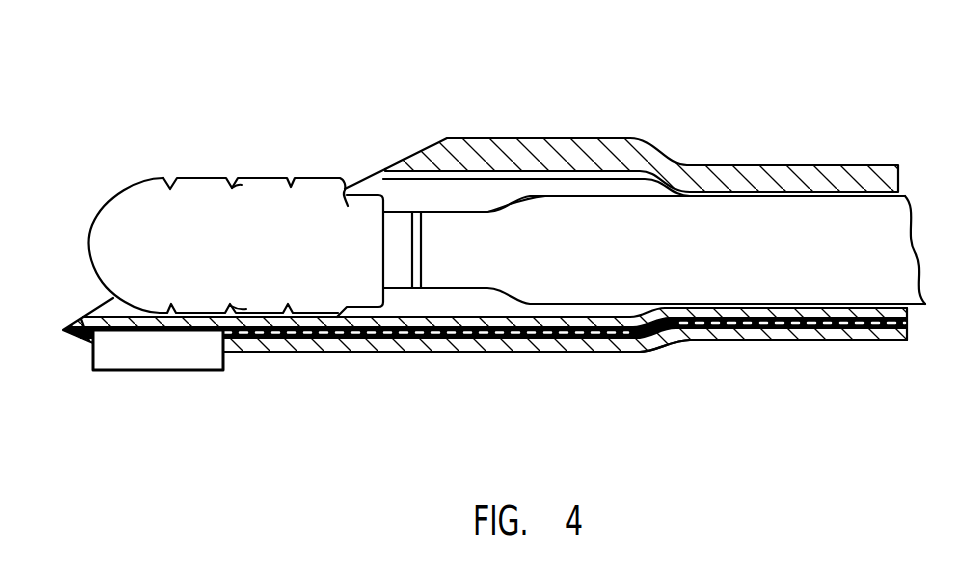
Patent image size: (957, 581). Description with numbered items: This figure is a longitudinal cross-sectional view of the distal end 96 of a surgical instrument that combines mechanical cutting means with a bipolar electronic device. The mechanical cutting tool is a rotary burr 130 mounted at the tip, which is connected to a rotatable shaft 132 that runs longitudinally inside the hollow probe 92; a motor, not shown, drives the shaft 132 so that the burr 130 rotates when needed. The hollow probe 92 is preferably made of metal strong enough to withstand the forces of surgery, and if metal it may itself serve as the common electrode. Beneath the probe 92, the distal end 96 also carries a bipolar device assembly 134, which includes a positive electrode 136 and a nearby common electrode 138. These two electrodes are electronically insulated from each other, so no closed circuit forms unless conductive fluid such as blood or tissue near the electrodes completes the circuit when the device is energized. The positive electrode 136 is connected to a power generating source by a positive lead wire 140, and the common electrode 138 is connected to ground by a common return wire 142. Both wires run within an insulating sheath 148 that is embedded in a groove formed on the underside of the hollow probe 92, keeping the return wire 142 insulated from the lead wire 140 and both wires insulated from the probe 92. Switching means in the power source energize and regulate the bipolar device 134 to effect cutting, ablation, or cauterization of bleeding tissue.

The hollow probe 92 is at (592, 150).
The distal end 96 is at (506, 98).
The rotary burr 130 is at (198, 192).
The rotatable shaft 132 is at (740, 227).
The bipolar device assembly 134 is at (207, 395).
The positive electrode 136 is at (131, 357).
The common electrode 138 is at (280, 348).
The positive lead wire 140 is at (381, 337).
The common return wire 142 is at (481, 346).
The insulating sheath 148 is at (621, 350).